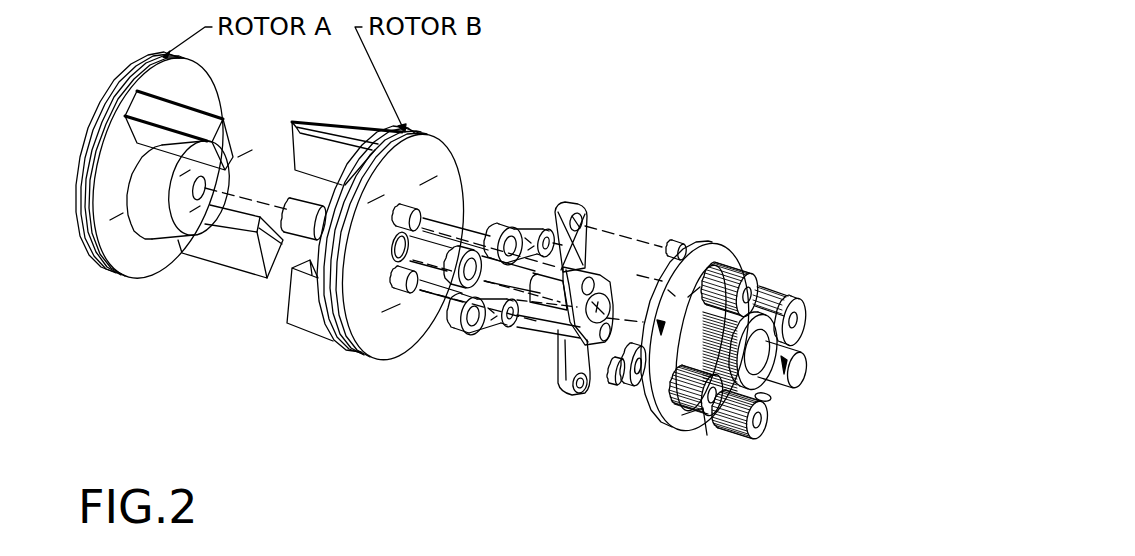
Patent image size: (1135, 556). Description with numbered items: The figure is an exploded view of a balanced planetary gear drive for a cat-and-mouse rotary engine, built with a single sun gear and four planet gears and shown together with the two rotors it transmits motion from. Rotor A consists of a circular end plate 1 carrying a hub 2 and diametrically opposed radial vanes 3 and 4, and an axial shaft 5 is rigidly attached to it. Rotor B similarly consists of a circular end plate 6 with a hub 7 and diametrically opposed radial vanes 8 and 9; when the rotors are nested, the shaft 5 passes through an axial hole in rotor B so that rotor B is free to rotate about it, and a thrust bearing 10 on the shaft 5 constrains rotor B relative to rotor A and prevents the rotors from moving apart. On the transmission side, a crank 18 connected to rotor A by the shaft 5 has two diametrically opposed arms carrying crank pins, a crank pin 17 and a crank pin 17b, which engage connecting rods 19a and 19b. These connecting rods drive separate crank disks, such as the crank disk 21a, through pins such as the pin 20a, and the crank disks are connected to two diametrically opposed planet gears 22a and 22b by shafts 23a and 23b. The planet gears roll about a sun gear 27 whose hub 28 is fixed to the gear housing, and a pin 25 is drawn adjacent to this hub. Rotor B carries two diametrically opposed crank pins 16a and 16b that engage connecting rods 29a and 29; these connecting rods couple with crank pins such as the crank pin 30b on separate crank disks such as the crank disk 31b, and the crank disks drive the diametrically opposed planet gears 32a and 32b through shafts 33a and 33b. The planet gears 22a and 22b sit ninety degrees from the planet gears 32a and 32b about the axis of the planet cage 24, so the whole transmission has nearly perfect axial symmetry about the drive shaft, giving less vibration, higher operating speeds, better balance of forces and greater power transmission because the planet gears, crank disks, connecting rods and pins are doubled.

The circular end plate 1 is at (90, 262).
The hub 2 is at (153, 200).
The radial vane 3 is at (220, 263).
The radial vane 4 is at (192, 105).
The axial shaft 5 is at (553, 313).
The circular end plate 6 is at (358, 353).
The hub 7 is at (296, 282).
The radial vane 8 is at (316, 333).
The radial vane 9 is at (315, 110).
The thrust bearing 10 is at (458, 287).
The crank pin 16a is at (410, 213).
The crank pin 16b is at (407, 290).
The crank pin 17 is at (578, 228).
The crank pin 17b is at (594, 280).
The crank 18 is at (616, 236).
The connecting rod 19a is at (583, 262).
The connecting rod 19b is at (570, 390).
The pin 20a is at (670, 243).
The crank disk 21a is at (684, 258).
The planet gear 22a is at (756, 276).
The planet gear 22b is at (757, 445).
The shaft 23a is at (789, 258).
The shaft 23b is at (787, 456).
The planet cage 24 is at (735, 248).
The output pin 25 is at (802, 356).
The sun gear 27 is at (771, 402).
The hub 28 is at (767, 388).
The connecting rod 29 is at (482, 332).
The connecting rod 29a is at (513, 232).
The crank pin 30b is at (612, 380).
The crank disk 31b is at (630, 385).
The planet gear 32a is at (819, 306).
The planet gear 32b is at (689, 443).
The shaft 33a is at (797, 318).
The shaft 33b is at (707, 417).